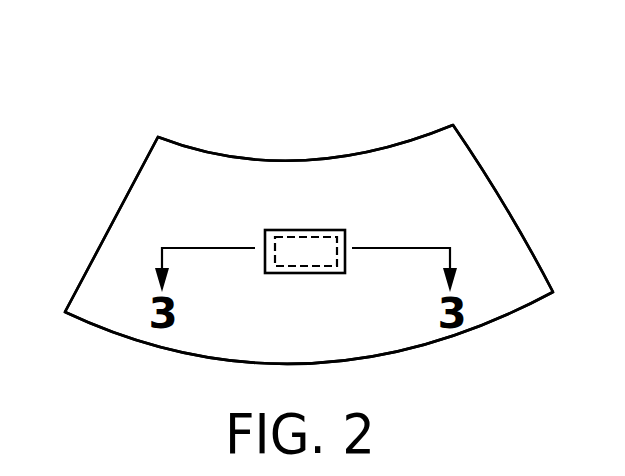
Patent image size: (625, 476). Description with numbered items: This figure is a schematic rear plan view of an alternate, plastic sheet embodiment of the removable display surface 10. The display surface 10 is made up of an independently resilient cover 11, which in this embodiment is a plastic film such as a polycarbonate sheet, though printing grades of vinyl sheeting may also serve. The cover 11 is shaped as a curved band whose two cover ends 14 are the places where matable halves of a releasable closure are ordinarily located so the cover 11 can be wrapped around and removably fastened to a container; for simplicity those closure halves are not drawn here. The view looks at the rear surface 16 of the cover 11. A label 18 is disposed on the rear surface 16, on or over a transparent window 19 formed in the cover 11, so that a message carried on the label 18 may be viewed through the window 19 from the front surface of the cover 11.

The removable display surface 10 is at (238, 126).
The cover 11 is at (372, 150).
The cover end 14 is at (108, 232).
The rear surface 16 is at (357, 335).
The label 18 is at (285, 230).
The transparent window 19 is at (287, 273).